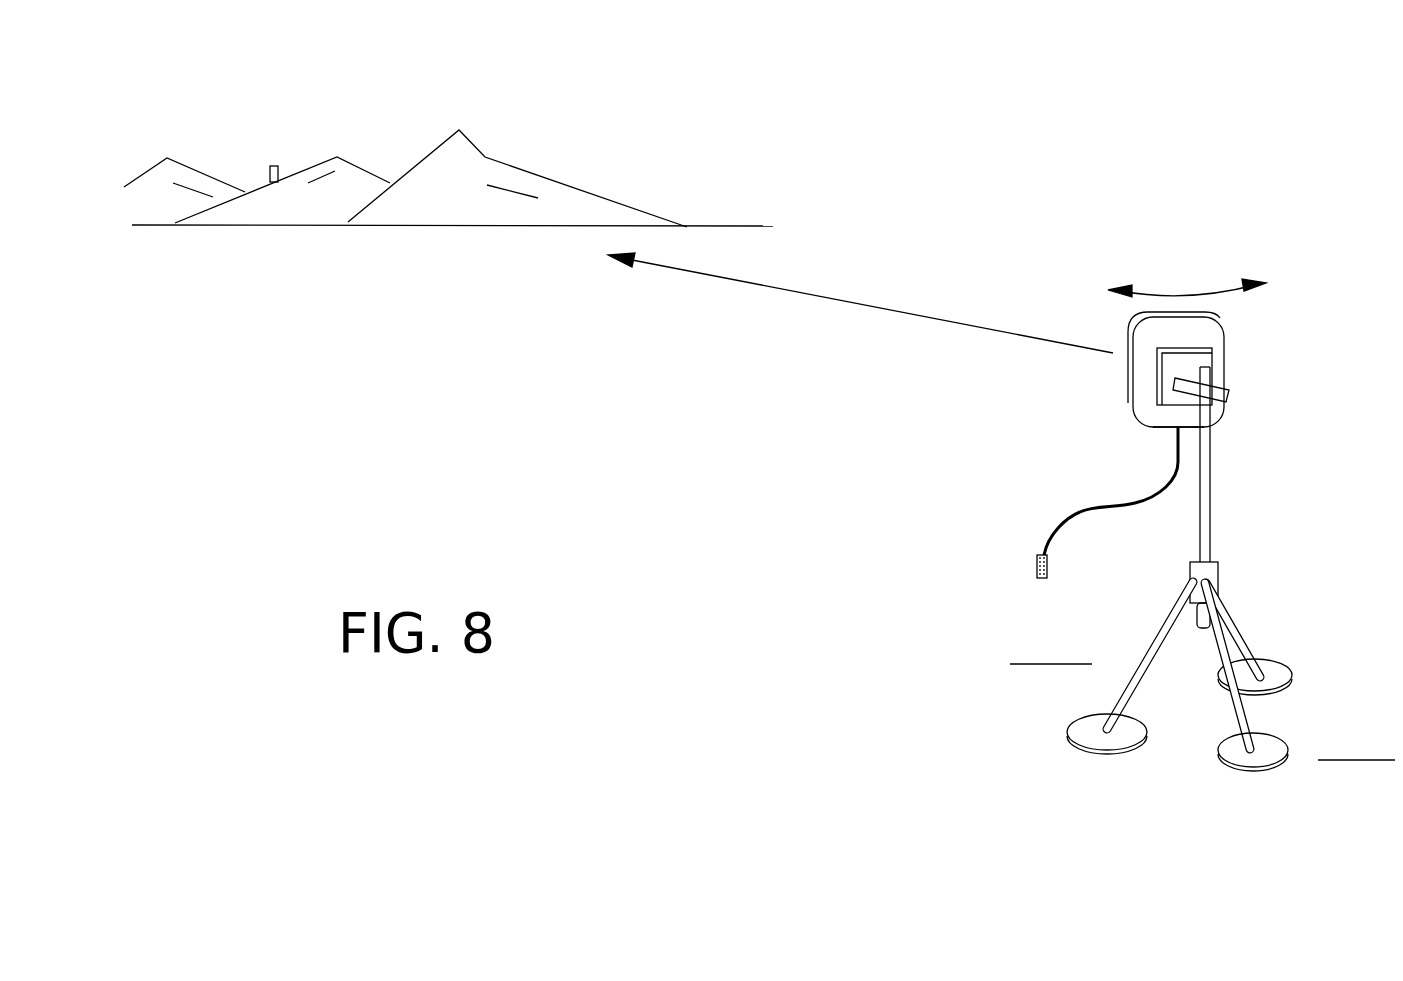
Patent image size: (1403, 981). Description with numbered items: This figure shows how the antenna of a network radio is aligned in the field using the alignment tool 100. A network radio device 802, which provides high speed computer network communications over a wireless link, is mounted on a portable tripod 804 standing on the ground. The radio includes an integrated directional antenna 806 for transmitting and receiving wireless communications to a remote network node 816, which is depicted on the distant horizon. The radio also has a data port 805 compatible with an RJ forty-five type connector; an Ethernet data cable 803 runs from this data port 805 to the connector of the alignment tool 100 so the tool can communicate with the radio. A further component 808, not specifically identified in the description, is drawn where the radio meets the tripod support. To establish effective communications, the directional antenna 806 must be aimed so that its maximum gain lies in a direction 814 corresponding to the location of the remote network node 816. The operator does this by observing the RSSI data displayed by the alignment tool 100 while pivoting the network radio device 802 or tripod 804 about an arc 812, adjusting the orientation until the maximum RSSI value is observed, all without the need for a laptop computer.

The alignment tool 100 is at (1033, 563).
The network radio device 802 is at (1250, 357).
The Ethernet data cable 803 is at (1088, 508).
The portable tripod 804 is at (1212, 510).
The data port 805 is at (1158, 428).
The directional antenna 806 is at (1128, 371).
The mounting bracket 808 is at (1143, 408).
The arc 812 is at (1165, 291).
The direction 814 is at (853, 299).
The remote network node 816 is at (267, 170).